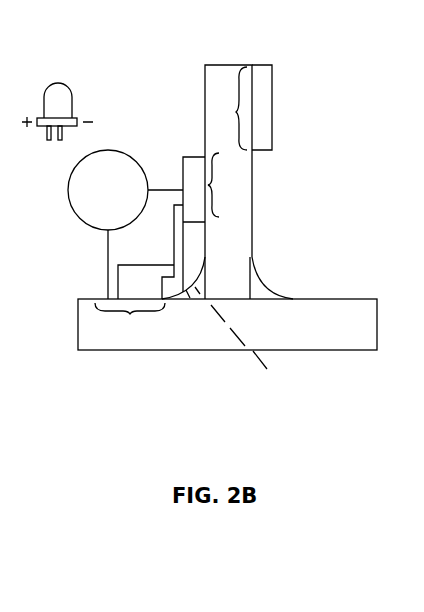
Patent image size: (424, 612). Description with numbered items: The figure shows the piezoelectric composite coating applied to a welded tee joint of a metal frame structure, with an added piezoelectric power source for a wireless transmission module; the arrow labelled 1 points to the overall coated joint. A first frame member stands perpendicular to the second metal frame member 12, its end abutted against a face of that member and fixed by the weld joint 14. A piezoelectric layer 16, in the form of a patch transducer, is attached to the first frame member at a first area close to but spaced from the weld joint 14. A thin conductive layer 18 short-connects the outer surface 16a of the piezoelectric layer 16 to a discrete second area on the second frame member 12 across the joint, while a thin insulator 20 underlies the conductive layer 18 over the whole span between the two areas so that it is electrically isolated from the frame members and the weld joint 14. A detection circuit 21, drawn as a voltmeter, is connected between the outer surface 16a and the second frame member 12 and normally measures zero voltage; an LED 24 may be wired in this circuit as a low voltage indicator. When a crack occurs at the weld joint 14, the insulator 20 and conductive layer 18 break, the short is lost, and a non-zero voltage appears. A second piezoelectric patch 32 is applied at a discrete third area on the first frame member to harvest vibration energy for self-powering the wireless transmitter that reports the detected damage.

The light emitting device assembly 1 is at (338, 314).
The second metal frame member 12 is at (316, 343).
The weld joint 14 is at (187, 292).
The piezoelectric layer 16 is at (193, 162).
The outer surface of the piezoelectric layer 16a is at (183, 170).
The conductive layer 18 is at (134, 284).
The insulator 20 is at (193, 258).
The detection circuit 21 is at (104, 251).
The LED 24 is at (65, 79).
The second piezoelectric patch 32 is at (264, 112).